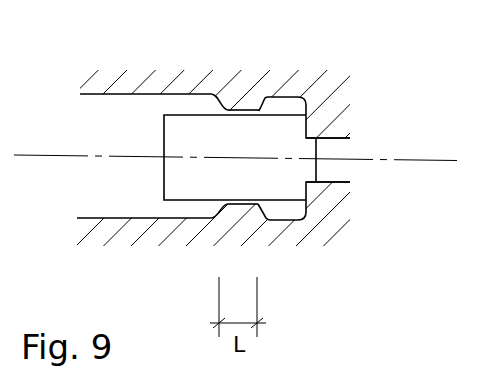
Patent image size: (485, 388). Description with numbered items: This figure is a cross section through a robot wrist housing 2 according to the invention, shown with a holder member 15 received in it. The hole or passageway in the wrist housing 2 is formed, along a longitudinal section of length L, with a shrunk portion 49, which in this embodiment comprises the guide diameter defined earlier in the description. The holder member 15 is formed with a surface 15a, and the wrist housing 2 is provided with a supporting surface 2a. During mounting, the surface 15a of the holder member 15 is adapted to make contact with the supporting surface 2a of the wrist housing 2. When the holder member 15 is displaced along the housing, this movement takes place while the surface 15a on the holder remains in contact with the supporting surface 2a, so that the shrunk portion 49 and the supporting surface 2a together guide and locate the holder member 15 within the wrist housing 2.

The wrist housing 2 is at (124, 124).
The supporting surface 2a is at (320, 127).
The shrunk portion 49 is at (242, 111).
The holder member 15 is at (275, 140).
The surface 15a is at (285, 190).